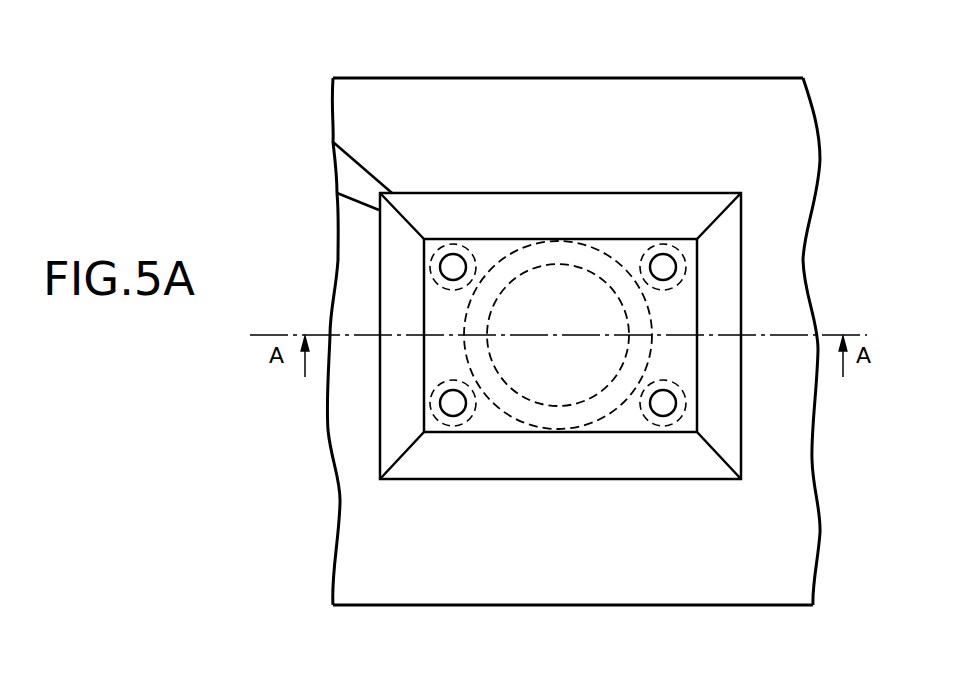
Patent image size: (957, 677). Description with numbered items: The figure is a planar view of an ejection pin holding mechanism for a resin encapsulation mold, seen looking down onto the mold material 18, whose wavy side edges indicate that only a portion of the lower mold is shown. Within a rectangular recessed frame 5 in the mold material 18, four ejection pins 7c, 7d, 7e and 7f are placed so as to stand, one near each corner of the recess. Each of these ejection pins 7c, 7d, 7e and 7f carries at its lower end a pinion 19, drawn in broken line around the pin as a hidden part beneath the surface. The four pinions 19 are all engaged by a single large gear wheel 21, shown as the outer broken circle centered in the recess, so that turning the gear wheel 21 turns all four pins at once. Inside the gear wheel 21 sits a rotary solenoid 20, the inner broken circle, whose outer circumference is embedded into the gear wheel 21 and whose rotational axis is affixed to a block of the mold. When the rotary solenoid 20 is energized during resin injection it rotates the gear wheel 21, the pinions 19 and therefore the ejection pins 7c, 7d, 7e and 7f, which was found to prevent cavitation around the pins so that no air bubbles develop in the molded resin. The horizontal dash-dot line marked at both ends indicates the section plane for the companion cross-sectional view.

The frame / recess 5 is at (366, 183).
The mold material 18 is at (798, 122).
The pinion 19 is at (427, 268).
The rotary solenoid 20 is at (563, 388).
The gear wheel 21 is at (567, 252).
The ejection pin 7c is at (447, 416).
The ejection pin 7d is at (664, 416).
The ejection pin 7e is at (453, 255).
The ejection pin 7f is at (664, 255).